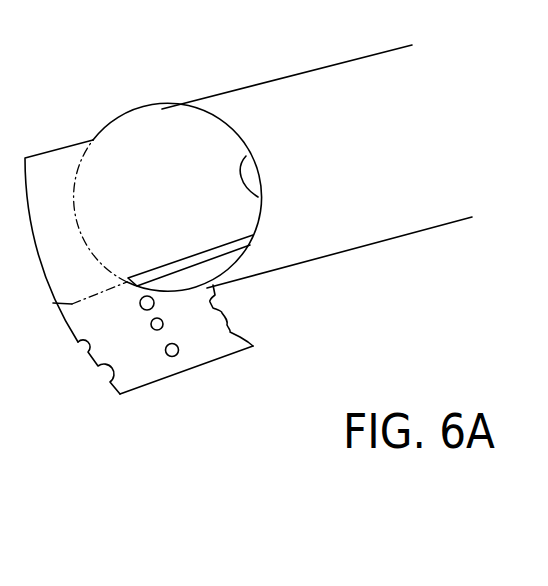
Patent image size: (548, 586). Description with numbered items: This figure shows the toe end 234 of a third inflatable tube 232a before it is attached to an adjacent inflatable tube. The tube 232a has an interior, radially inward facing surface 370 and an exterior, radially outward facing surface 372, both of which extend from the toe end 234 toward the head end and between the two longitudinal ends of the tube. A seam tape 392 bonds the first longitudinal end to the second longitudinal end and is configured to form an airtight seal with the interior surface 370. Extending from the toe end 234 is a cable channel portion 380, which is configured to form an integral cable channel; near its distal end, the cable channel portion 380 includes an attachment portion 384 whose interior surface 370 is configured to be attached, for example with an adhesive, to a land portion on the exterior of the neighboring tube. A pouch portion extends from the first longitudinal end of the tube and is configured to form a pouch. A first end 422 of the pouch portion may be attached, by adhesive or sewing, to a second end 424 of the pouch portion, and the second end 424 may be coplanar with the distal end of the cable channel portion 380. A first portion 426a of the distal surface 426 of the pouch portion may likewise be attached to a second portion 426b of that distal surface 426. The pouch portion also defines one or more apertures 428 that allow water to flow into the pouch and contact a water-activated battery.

The third inflatable tube 232a is at (300, 96).
The exterior surface 372 is at (375, 171).
The interior surface 370 is at (145, 206).
The toe end 234 is at (258, 197).
The seam tape 392 is at (189, 262).
The cable channel portion 380 is at (89, 128).
The attachment portion 384 is at (84, 287).
The second end of pouch portion 424 is at (116, 391).
The distal surface of pouch portion 426 is at (205, 365).
The first portion of distal surface 426a is at (203, 380).
The second portion of distal surface 426b is at (258, 350).
The first end of pouch portion 422 is at (252, 342).
The apertures 428 is at (143, 308).